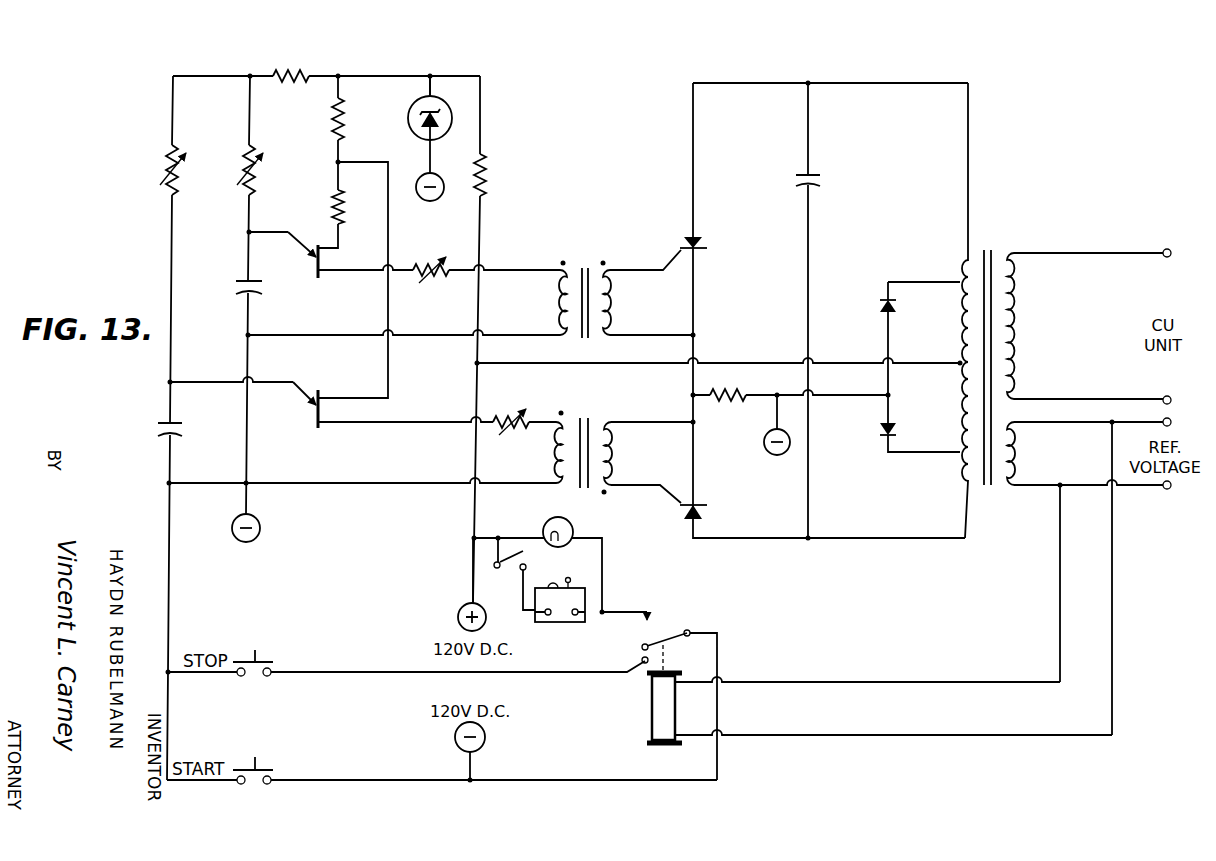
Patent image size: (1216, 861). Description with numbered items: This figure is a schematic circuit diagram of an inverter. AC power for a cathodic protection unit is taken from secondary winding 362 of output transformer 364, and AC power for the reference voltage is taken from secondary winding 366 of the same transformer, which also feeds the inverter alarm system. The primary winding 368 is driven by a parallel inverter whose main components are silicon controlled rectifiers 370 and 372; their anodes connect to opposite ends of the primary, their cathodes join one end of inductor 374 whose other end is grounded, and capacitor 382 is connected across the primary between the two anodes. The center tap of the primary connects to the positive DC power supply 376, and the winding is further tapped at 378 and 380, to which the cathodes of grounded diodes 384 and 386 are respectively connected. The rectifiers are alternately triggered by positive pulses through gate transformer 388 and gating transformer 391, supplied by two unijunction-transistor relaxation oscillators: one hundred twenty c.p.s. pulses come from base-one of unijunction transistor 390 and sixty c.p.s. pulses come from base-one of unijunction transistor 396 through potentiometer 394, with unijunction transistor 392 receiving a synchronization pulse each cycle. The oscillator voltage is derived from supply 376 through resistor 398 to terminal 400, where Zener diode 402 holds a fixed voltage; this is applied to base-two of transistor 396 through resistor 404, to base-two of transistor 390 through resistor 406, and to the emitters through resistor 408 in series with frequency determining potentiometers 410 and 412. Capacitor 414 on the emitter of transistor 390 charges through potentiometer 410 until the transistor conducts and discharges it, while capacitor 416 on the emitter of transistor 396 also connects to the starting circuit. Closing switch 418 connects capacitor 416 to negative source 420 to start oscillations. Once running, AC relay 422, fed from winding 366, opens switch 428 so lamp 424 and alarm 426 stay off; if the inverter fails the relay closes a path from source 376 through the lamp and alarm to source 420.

The secondary winding 362 is at (1012, 312).
The output transformer 364 is at (992, 252).
The secondary winding 366 is at (1012, 453).
The primary winding 368 is at (959, 328).
The silicon controlled rectifier 370 is at (704, 242).
The silicon controlled rectifier 372 is at (704, 511).
The inductor 374 is at (733, 392).
The positive DC power supply 376 is at (458, 614).
The tap 378 is at (957, 281).
The tap 380 is at (958, 456).
The capacitor 382 is at (824, 181).
The diode 384 is at (878, 306).
The diode 386 is at (878, 433).
The gate transformer 388 is at (586, 265).
The unijunction transistor 390 is at (316, 268).
The gating transformer 391 is at (586, 412).
The unijunction transistor 392 is at (430, 262).
The potentiometer 394 is at (510, 412).
The unijunction transistor 396 is at (316, 418).
The resistor 398 is at (484, 180).
The terminal 400 is at (432, 75).
The Zener diode 402 is at (410, 112).
The resistor 404 is at (337, 120).
The resistor 406 is at (337, 208).
The resistor 408 is at (296, 74).
The frequency determining potentiometer 410 is at (257, 178).
The frequency determining potentiometer 412 is at (168, 160).
The capacitor 414 is at (240, 284).
The capacitor 416 is at (194, 415).
The switch 418 is at (268, 764).
The negative source 420 is at (485, 744).
The AC relay 422 is at (649, 706).
The lamp 424 is at (572, 523).
The alarm 426 is at (570, 623).
The switch 428 is at (490, 562).